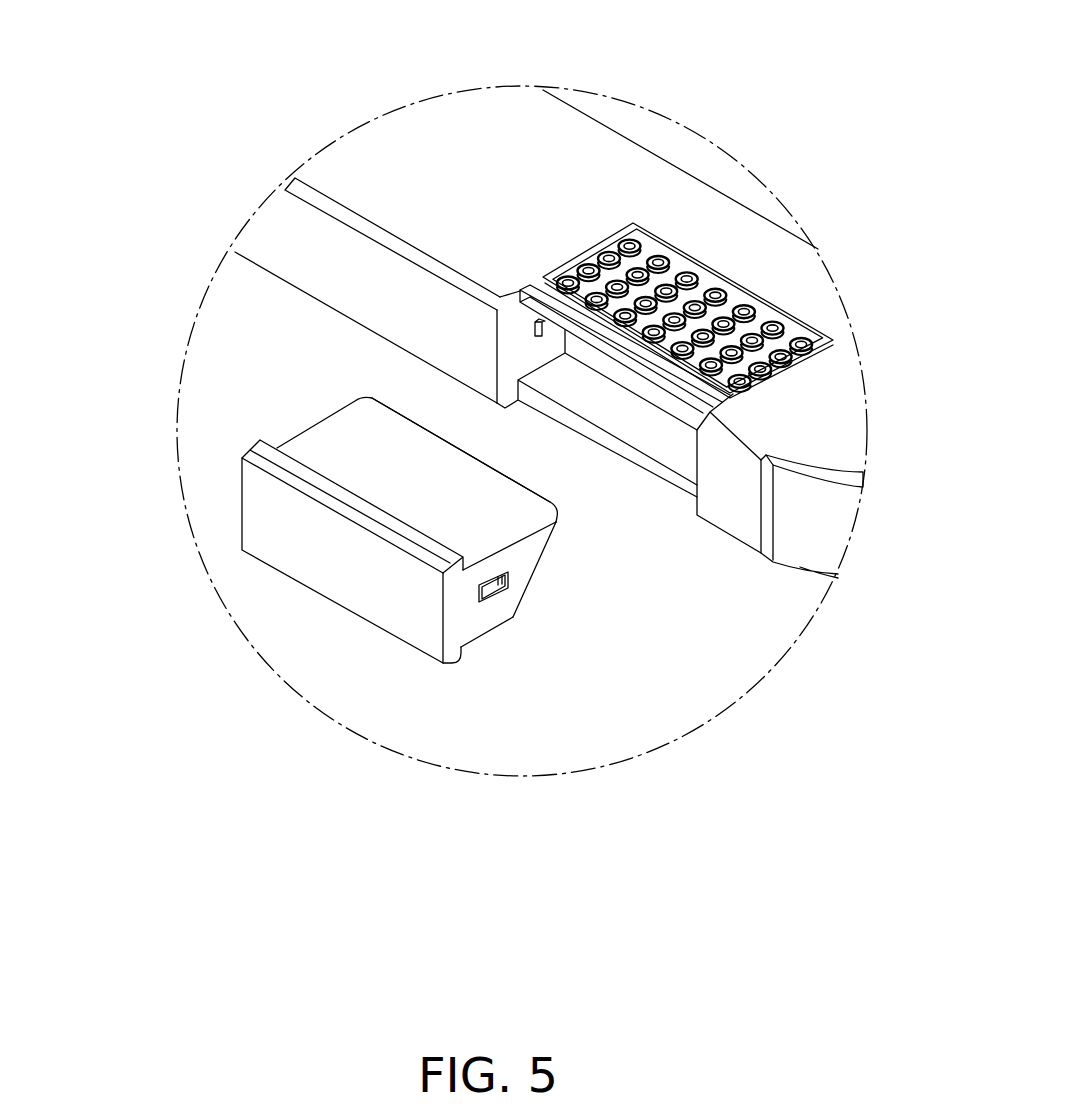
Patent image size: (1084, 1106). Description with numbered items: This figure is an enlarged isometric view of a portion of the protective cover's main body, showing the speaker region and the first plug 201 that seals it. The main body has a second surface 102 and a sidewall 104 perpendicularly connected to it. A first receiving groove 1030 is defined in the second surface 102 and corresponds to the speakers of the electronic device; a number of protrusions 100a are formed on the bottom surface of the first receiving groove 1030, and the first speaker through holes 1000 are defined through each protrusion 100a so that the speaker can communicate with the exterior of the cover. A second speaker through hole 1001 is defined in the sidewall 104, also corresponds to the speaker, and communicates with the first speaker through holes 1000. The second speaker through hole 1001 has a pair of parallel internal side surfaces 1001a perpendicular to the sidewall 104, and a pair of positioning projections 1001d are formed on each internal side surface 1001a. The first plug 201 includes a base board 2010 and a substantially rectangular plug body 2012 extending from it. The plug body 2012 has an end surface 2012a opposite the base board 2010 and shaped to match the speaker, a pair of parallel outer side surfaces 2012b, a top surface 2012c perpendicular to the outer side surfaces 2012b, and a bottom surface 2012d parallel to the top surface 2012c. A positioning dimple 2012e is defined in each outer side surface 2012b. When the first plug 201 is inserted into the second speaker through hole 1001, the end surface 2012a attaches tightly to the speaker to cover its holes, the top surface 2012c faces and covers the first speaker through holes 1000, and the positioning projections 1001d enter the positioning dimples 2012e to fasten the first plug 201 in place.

The second surface 102 is at (443, 157).
The sidewall 104 is at (295, 233).
The first speaker through holes 1000 is at (690, 273).
The first receiving groove 1030 is at (643, 253).
The protrusions 100a is at (703, 273).
The second speaker through hole 1001 is at (648, 430).
The internal side surfaces 1001a is at (513, 348).
The positioning projections 1001d is at (538, 326).
The first plug 201 is at (383, 600).
The plug body 2012 is at (527, 547).
The end surface 2012a is at (550, 549).
The outer side surfaces 2012b is at (486, 613).
The top surface 2012c is at (337, 450).
The bottom surface 2012d is at (484, 641).
The positioning dimple 2012e is at (479, 600).
The base board 2010 is at (451, 657).